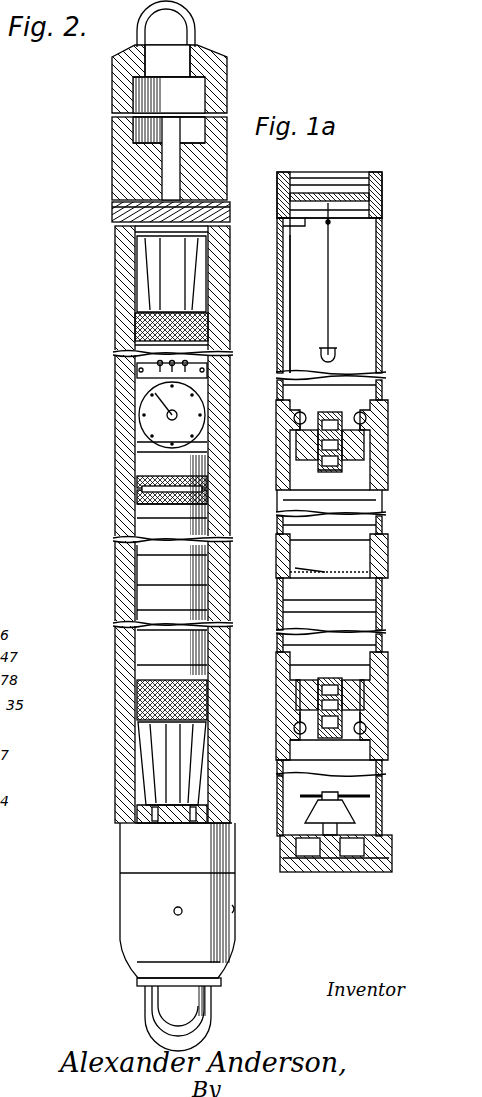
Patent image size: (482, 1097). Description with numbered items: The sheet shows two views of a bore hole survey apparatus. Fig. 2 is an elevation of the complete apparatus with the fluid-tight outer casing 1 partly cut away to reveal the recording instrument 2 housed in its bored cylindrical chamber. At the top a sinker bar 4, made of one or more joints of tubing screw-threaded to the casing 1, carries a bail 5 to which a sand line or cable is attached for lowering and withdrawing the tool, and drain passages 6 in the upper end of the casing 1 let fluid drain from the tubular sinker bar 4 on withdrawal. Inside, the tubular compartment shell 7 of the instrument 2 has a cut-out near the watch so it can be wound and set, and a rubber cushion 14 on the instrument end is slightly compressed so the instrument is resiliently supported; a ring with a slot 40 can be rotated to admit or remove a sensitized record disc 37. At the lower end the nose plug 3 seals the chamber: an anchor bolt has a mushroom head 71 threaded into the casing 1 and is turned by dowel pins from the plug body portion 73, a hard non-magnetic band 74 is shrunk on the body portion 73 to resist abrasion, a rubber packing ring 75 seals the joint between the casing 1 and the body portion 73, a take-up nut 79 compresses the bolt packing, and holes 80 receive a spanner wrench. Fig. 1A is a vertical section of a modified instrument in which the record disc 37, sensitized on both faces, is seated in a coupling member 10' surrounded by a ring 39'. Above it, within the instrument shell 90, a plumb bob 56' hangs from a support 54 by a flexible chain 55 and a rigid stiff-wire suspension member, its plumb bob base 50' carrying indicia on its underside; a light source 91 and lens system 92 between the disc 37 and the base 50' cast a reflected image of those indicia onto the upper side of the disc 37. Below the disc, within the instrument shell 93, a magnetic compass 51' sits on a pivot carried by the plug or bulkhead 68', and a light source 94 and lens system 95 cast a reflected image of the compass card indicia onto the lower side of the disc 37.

In FIG. 2, the outer casing 1 is at (118, 338).
In FIG. 2, the recording instrument 2 is at (137, 462).
In FIG. 2, the nose plug 3 is at (120, 890).
In FIG. 2, the sinker bar 4 is at (116, 137).
In FIG. 2, the bail 5 is at (198, 23).
In FIG. 2, the drain passages 6 is at (122, 208).
In FIG. 2, the compartment shell 7 is at (120, 760).
In FIG. 1A, the compartment shell 7 is at (278, 180).
In FIG. 2, the rubber cushion 14 is at (142, 275).
In FIG. 2, the slot 40 is at (140, 500).
In FIG. 2, the mushroom head 71 is at (175, 825).
In FIG. 2, the body portion of the plug 73 is at (140, 975).
In FIG. 2, the band 74 is at (122, 950).
In FIG. 2, the packing ring 75 is at (156, 790).
In FIG. 2, the take-up nut 79 is at (148, 1010).
In FIG. 2, the holes 80 is at (174, 912).
In FIG. 1A, the coupling member 10' is at (315, 547).
In FIG. 1A, the record disc 37 is at (285, 603).
In FIG. 1A, the ring 39' is at (306, 581).
In FIG. 1A, the plumb bob base 50' is at (312, 387).
In FIG. 1A, the magnetic compass 51' is at (312, 806).
In FIG. 1A, the support 54 is at (300, 222).
In FIG. 1A, the flexible chain 55 is at (326, 232).
In FIG. 1A, the plumb bob 56' is at (290, 318).
In FIG. 1A, the plug or bulkhead 68' is at (317, 853).
In FIG. 1A, the instrument shell 90 is at (288, 305).
In FIG. 1A, the light source 91 is at (300, 418).
In FIG. 1A, the lens system 92 is at (295, 462).
In FIG. 1A, the instrument shell 93 is at (284, 770).
In FIG. 1A, the light source 94 is at (292, 740).
In FIG. 1A, the lens system 95 is at (296, 705).